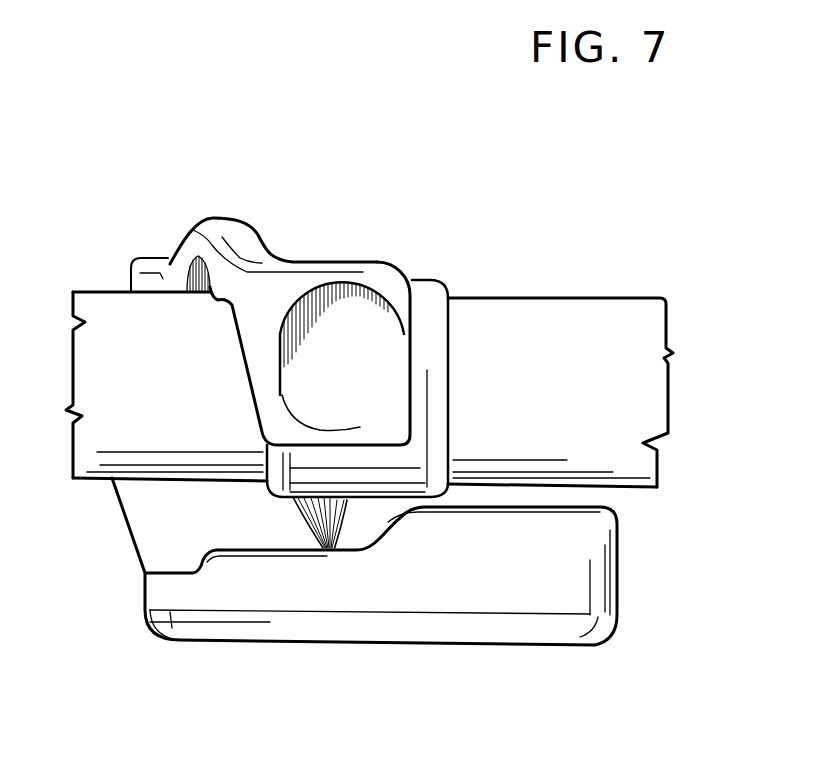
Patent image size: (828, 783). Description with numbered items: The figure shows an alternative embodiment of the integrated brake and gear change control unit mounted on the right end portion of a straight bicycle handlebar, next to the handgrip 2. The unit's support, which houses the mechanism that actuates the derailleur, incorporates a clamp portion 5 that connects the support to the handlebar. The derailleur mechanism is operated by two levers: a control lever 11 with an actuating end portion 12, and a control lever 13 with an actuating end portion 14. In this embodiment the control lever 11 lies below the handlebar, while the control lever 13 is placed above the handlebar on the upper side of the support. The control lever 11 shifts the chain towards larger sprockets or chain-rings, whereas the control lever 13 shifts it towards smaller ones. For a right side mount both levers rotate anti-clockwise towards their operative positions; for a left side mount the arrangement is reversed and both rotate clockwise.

The handgrip 2 is at (583, 320).
The clamp portion 5 is at (410, 450).
The control lever 11 is at (228, 592).
The actuating end portion 12 is at (620, 573).
The control lever 13 is at (252, 228).
The actuating end portion 14 is at (362, 337).